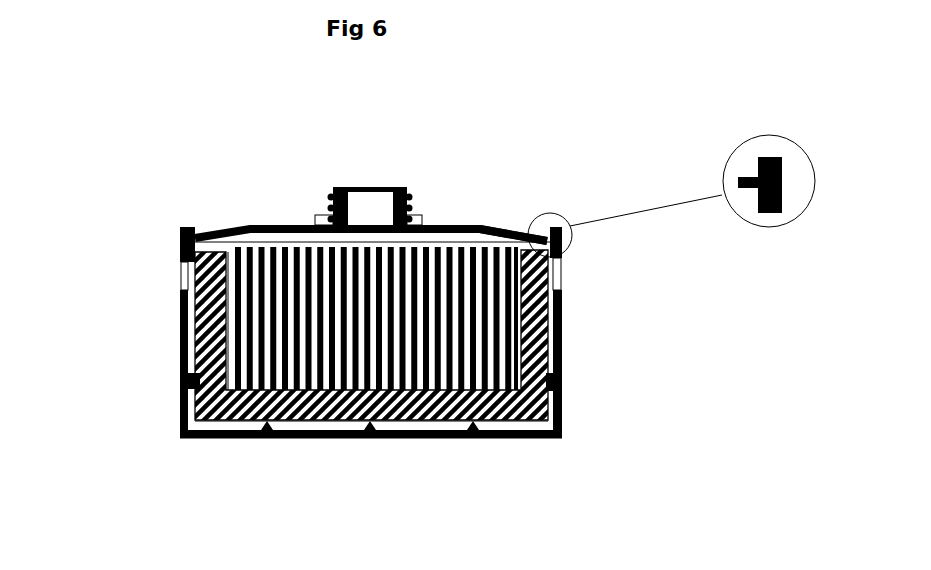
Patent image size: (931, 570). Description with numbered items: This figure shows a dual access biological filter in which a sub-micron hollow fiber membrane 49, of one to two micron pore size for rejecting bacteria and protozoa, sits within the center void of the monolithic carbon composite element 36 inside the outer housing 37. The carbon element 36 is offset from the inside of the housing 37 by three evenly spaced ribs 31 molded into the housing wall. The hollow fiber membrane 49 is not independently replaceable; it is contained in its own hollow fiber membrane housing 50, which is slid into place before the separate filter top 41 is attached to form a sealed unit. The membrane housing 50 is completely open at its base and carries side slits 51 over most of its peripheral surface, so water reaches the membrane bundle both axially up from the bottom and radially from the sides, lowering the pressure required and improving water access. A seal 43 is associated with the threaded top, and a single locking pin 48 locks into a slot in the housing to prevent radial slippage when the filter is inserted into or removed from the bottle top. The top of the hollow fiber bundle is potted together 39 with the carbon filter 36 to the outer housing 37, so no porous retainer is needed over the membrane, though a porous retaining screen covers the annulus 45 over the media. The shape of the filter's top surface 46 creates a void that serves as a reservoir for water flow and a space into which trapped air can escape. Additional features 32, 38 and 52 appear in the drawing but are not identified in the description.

The ribs 31 is at (180, 431).
The insulating liner 32 is at (178, 333).
The carbon composite element 36 is at (283, 433).
The outer housing 37 is at (472, 438).
The left gasket 38 is at (178, 278).
The seal 39 is at (178, 245).
The filter top 41 is at (440, 220).
The seal 43 is at (318, 215).
The annulus 45 is at (230, 230).
The filter top surface 46 is at (305, 237).
The locking pin 48 is at (763, 163).
The hollow fiber membrane 49 is at (562, 358).
The hollow fiber membrane housing 50 is at (565, 300).
The side slits 51 is at (183, 378).
The protrusion 52 is at (373, 433).